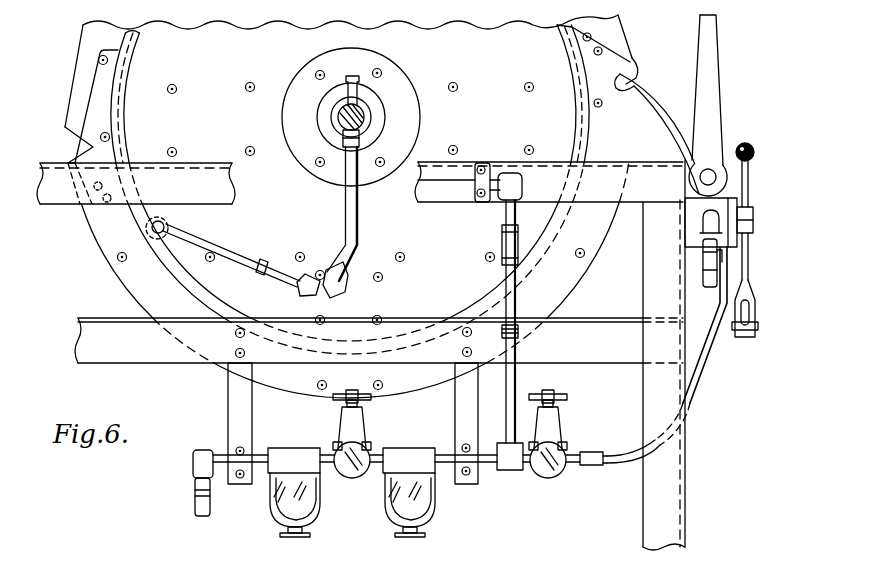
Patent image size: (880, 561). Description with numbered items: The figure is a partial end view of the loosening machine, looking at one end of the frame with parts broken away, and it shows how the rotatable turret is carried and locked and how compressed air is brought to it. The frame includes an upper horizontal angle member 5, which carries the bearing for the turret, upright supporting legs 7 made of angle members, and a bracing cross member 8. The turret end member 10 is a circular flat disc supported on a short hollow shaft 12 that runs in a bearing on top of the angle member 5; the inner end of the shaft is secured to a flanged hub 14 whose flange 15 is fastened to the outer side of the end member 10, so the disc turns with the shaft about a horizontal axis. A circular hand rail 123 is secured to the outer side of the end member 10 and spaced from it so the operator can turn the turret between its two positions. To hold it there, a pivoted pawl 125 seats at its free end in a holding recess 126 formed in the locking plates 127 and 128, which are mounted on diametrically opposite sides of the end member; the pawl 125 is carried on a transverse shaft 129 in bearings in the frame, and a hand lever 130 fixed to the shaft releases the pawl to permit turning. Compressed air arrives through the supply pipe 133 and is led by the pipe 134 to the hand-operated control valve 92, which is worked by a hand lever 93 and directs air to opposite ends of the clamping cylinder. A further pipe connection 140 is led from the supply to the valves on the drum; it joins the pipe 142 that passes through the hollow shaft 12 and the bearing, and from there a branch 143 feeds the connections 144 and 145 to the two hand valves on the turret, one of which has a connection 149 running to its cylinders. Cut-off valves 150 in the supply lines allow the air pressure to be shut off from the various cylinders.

The angle member 5 is at (233, 180).
The upright supporting leg 7 is at (650, 497).
The cross member 8 is at (182, 363).
The end member 10 is at (100, 237).
The hollow shaft 12 is at (360, 110).
The flanged hub 14 is at (377, 128).
The flange 15 is at (415, 113).
The control valve 92 is at (720, 205).
The hand-operated lever 93 is at (751, 172).
The circular hand rail 123 is at (132, 58).
The pivoted pawl 125 is at (665, 110).
The holding recess 126 is at (68, 143).
The locking plate 127 is at (609, 52).
The locking plate 128 is at (80, 97).
The transverse shaft 129 is at (700, 178).
The hand lever 130 is at (710, 103).
The supply pipe 133 is at (195, 500).
The pipe 134 is at (698, 378).
The pipe connection 140 is at (507, 264).
The pipe 142 is at (375, 108).
The branch 143 is at (353, 220).
The connection 144 is at (313, 273).
The connection 145 is at (163, 224).
The connection 149 is at (703, 275).
The cut-off valve 150 is at (362, 445).